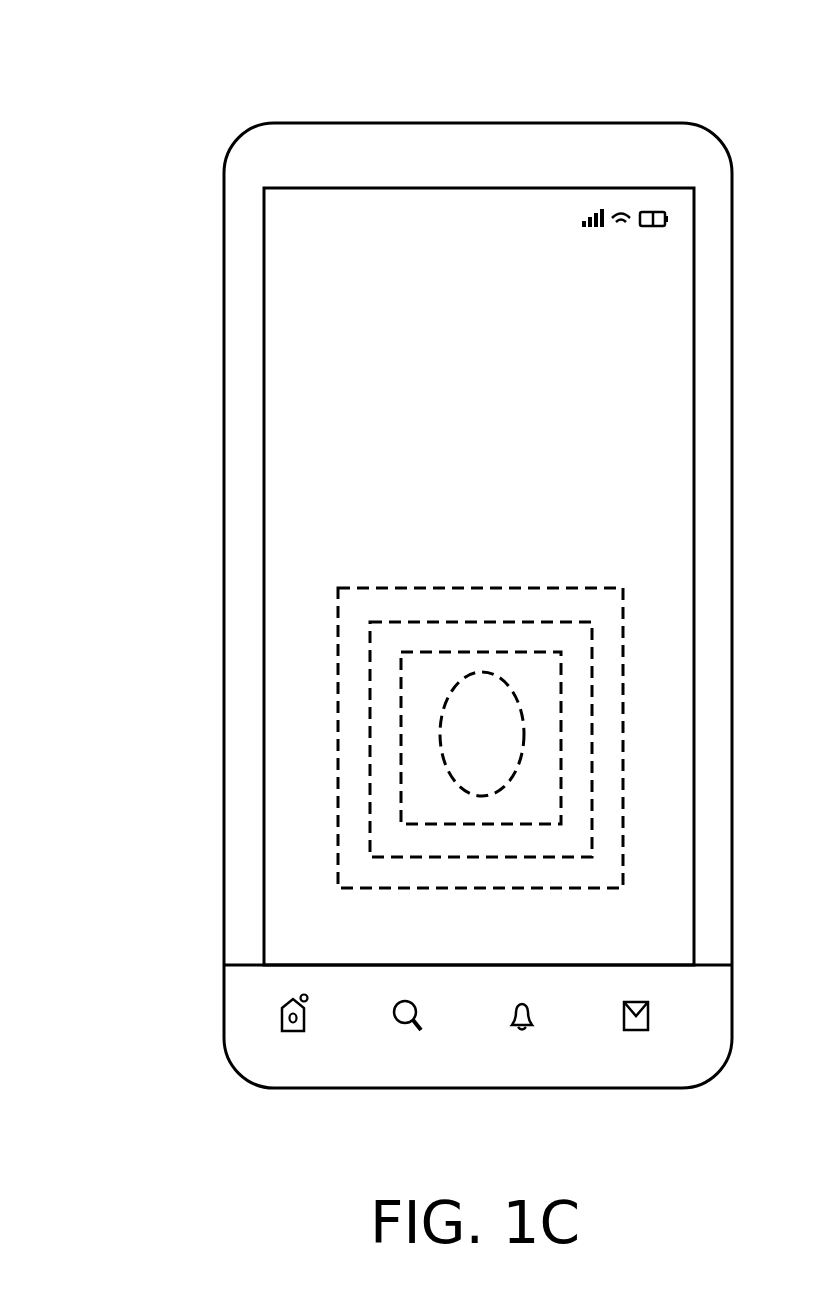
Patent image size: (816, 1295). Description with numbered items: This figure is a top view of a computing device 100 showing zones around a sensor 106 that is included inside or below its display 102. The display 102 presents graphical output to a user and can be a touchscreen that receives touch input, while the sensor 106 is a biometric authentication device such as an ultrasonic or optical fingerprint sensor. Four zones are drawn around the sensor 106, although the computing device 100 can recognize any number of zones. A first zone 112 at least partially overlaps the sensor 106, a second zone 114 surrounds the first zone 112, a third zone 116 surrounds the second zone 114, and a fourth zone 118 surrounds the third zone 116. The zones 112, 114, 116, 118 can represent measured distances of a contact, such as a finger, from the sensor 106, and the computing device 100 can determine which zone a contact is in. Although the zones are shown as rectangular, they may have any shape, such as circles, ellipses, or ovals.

The computing device 100 is at (216, 82).
The display 102 is at (464, 464).
The sensor 106 is at (460, 742).
The first zone 112 is at (507, 814).
The second zone 114 is at (510, 852).
The third zone 116 is at (510, 884).
The fourth zone 118 is at (514, 921).